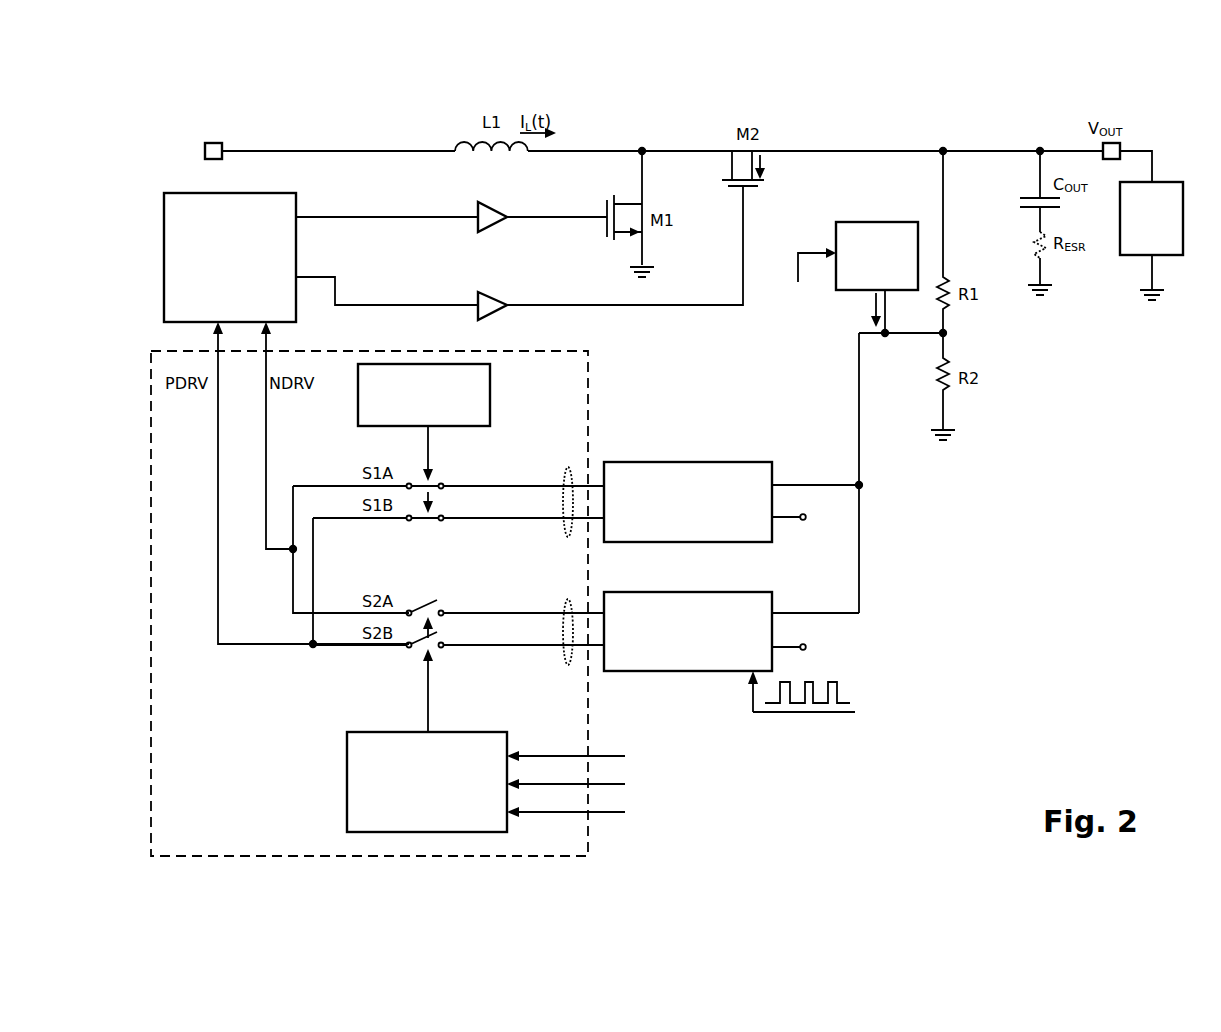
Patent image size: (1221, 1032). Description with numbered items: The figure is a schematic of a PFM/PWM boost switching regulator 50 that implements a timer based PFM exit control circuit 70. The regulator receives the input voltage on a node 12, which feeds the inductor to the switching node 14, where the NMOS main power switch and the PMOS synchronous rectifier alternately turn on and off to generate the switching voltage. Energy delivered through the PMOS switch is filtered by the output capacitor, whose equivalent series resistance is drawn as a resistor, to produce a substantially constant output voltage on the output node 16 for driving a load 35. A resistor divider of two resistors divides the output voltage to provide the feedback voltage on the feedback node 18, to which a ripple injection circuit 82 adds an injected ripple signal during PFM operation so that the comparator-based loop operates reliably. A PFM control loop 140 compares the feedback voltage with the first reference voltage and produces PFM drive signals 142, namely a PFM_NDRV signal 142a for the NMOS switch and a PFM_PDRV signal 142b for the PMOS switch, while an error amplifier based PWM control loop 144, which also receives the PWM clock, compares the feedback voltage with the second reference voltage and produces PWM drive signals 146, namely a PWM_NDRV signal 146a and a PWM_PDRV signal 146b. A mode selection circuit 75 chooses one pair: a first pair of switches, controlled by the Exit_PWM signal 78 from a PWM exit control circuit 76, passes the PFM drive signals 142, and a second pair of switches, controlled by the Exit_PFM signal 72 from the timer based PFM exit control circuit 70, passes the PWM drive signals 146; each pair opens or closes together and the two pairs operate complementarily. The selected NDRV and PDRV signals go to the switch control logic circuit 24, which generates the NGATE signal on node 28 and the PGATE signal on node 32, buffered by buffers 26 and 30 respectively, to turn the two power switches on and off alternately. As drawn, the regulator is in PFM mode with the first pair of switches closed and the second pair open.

The input node 12 is at (213, 143).
The switching node 14 is at (641, 152).
The output node 16 is at (990, 150).
The feedback node 18 is at (941, 338).
The switch control logic circuit 24 is at (230, 257).
The buffer 26 is at (490, 231).
The NGATE node 28 is at (556, 219).
The buffer 30 is at (490, 319).
The PGATE node 32 is at (577, 307).
The load 35 is at (1183, 208).
The boost switching regulator 50 is at (1126, 100).
The timer based PFM exit control circuit 70 is at (437, 832).
The Exit_PFM signal 72 is at (430, 708).
The mode selection circuit 75 is at (369, 603).
The PWM exit control circuit 76 is at (490, 379).
The Exit_PWM signal 78 is at (430, 441).
The ripple injection circuit 82 is at (869, 222).
The PFM control loop 140 is at (718, 462).
The PFM drive signals 142 is at (568, 466).
The PFM_NDRV signal 142a is at (498, 489).
The PFM_PDRV signal 142b is at (454, 520).
The PWM control loop 144 is at (745, 592).
The PWM drive signals 146 is at (568, 602).
The PWM_NDRV signal 146a is at (504, 617).
The PWM_PDRV signal 146b is at (454, 648).